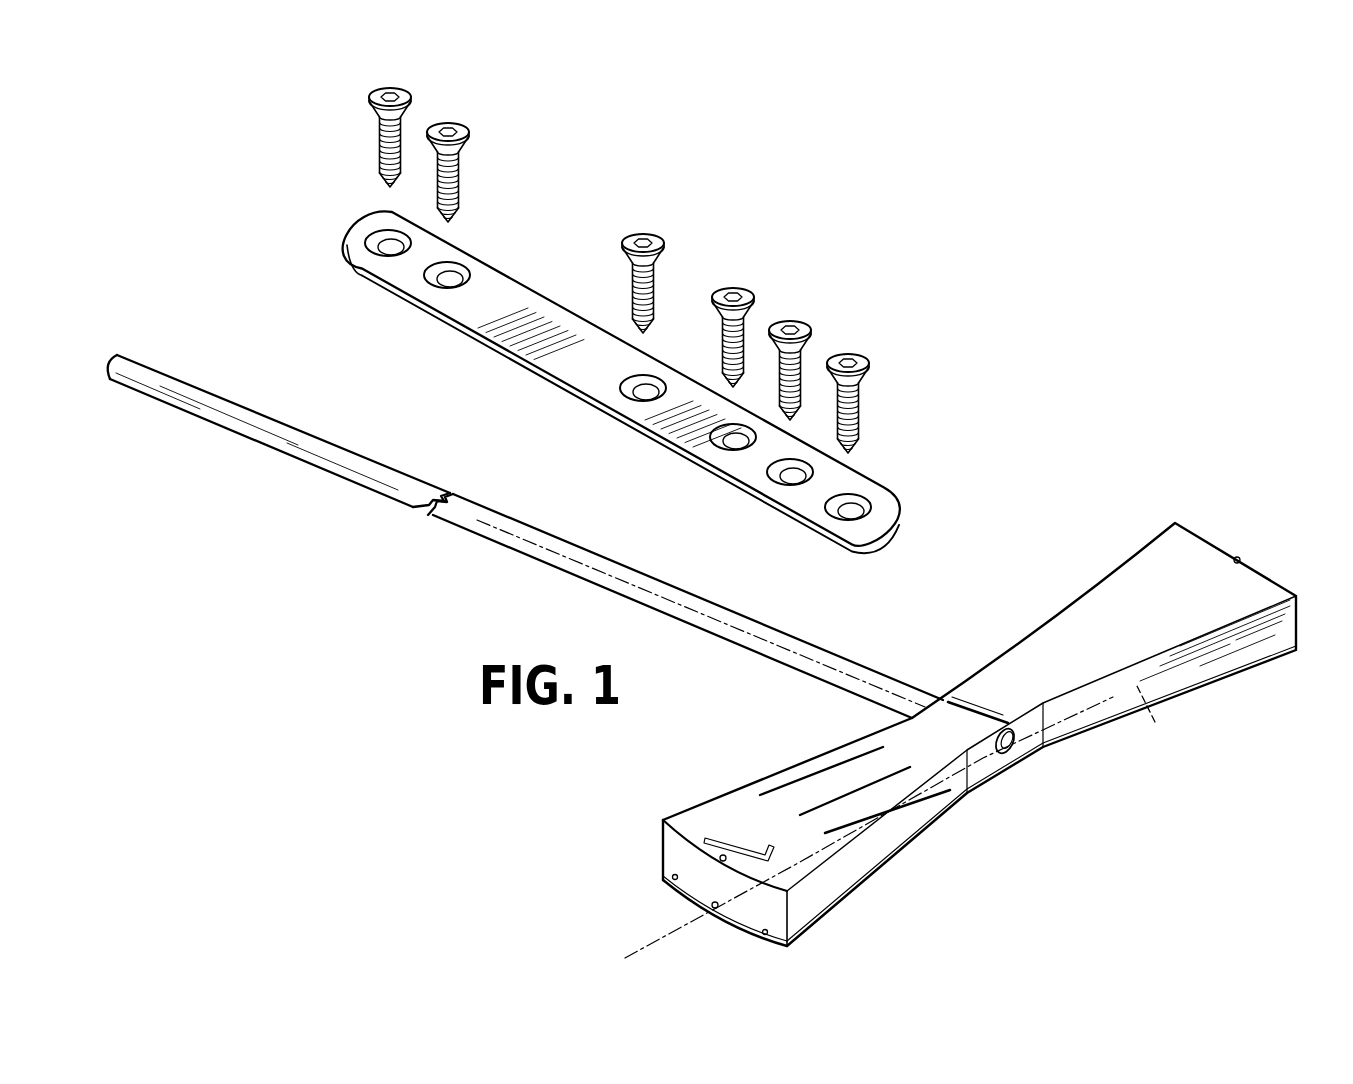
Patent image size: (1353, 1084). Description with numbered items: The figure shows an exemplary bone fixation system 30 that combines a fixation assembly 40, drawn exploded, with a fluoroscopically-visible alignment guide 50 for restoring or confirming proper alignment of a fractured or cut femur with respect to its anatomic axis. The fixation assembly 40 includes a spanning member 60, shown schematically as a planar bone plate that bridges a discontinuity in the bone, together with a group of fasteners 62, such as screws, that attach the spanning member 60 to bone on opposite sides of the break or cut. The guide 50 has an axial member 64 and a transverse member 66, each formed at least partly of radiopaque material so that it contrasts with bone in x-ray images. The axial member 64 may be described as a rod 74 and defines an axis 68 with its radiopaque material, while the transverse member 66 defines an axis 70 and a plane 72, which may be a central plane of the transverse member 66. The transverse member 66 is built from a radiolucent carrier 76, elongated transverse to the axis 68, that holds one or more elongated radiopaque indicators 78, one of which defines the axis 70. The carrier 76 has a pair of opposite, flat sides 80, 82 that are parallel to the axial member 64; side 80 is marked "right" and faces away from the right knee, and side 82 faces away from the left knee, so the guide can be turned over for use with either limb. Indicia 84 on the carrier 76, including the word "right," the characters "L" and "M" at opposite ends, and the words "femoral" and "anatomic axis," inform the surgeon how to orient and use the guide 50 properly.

The bone fixation system 30 is at (1005, 108).
The fixation assembly 40 is at (706, 194).
The alignment guide 50 is at (888, 621).
The spanning member 60 is at (487, 342).
The fasteners 62 is at (380, 140).
The axial member 64 is at (595, 553).
The transverse member 66 is at (715, 785).
The axis 68 is at (660, 595).
The axis 70 is at (662, 937).
The plane 72 is at (943, 790).
The rod 74 is at (530, 558).
The radiolucent carrier 76 is at (1063, 613).
The radiopaque indicators 78 is at (852, 874).
The side 80 is at (1028, 683).
The side 82 is at (1155, 722).
The indicia 84 is at (788, 768).